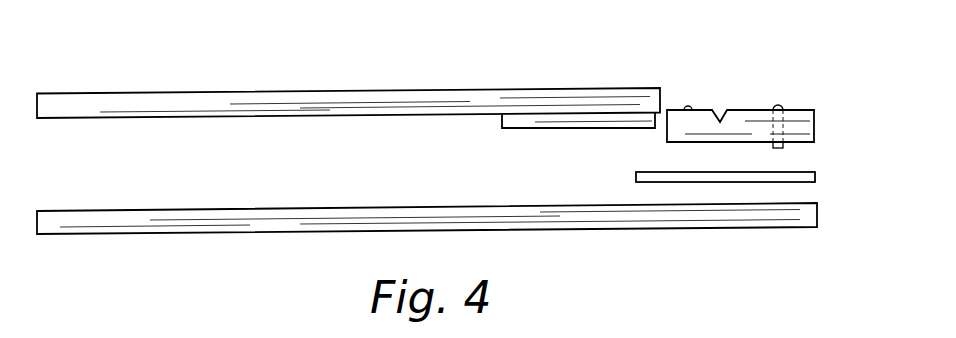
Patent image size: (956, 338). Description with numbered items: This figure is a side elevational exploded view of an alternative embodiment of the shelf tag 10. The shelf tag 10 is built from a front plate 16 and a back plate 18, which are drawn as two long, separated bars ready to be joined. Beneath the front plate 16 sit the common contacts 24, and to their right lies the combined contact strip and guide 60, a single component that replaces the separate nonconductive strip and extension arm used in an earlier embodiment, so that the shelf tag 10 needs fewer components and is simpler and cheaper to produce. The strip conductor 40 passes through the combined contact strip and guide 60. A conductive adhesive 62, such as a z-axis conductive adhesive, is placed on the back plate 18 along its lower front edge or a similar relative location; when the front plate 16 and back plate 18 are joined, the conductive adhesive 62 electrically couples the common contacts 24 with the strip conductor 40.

The shelf tag 10 is at (197, 60).
The front plate 16 is at (311, 96).
The back plate 18 is at (252, 222).
The common contacts 24 is at (541, 124).
The strip conductor 40 is at (778, 106).
The combined contact strip and guide 60 is at (800, 111).
The conductive adhesive 62 is at (673, 172).